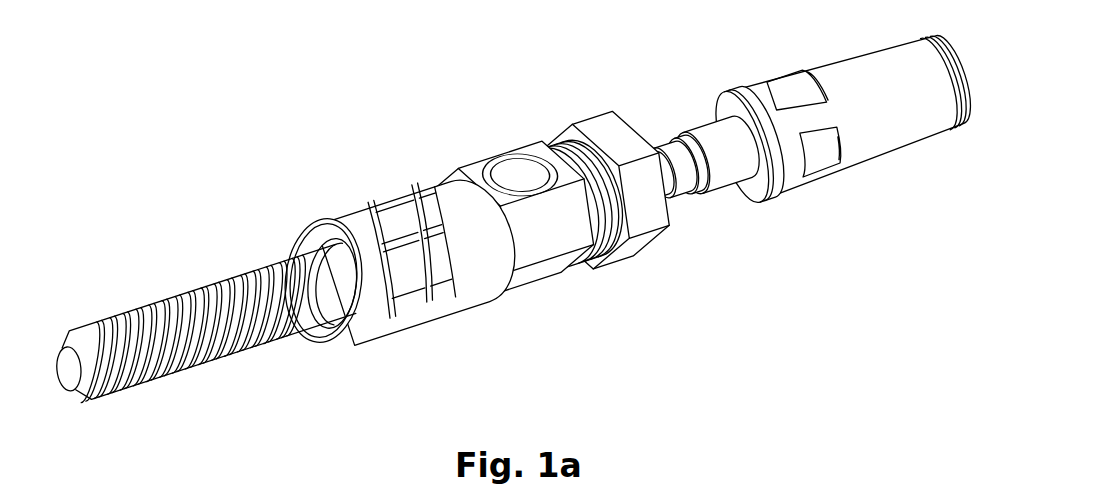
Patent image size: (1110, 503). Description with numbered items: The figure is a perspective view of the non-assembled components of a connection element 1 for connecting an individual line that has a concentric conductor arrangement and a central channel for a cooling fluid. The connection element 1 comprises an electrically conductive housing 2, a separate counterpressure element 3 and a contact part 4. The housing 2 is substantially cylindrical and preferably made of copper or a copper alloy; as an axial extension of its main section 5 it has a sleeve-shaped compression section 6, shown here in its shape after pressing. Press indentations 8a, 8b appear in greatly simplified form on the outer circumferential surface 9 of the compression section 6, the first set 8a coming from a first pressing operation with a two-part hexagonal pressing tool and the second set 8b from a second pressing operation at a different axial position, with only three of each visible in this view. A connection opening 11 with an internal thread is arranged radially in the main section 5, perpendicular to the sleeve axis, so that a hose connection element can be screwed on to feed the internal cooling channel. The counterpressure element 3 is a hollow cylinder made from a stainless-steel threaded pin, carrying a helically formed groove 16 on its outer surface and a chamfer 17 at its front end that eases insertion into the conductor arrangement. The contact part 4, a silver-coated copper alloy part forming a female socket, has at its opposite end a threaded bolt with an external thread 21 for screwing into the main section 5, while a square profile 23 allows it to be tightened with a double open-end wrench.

The connection element 1 is at (530, 248).
The electrically conductive housing 2 is at (482, 218).
The counterpressure element 3 is at (206, 286).
The contact part 4 is at (855, 148).
The main section 5 is at (516, 322).
The sleeve-shaped compression section 6 is at (444, 231).
The press indentations 8a is at (427, 300).
The press indentations 8b is at (392, 315).
The outer circumferential surface 9 is at (417, 189).
The connection opening 11 is at (520, 176).
The helically formed groove 16 is at (215, 286).
The chamfer 17 is at (280, 268).
The external thread 21 is at (690, 123).
The square profile 23 is at (793, 93).